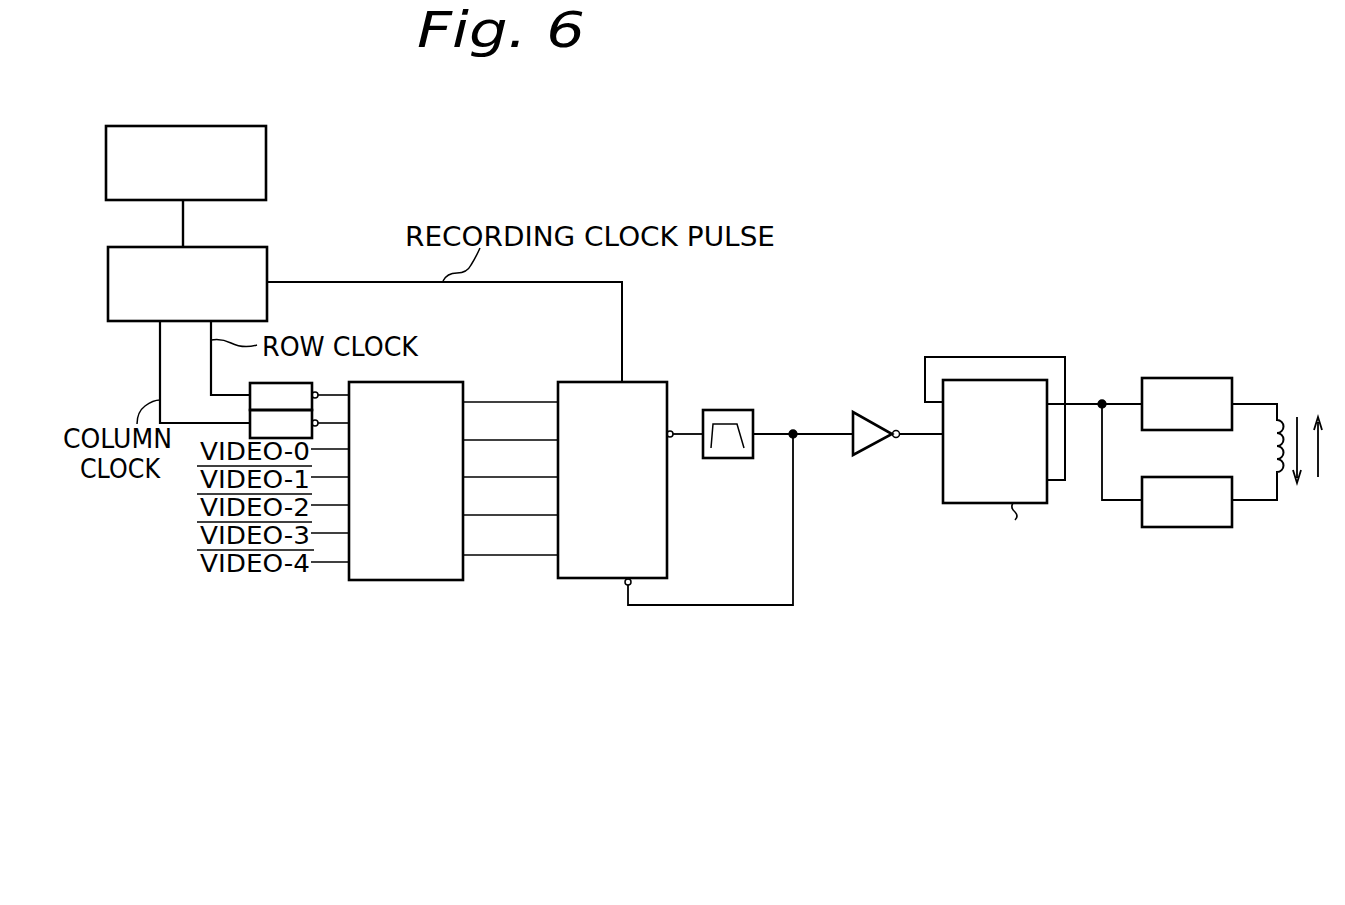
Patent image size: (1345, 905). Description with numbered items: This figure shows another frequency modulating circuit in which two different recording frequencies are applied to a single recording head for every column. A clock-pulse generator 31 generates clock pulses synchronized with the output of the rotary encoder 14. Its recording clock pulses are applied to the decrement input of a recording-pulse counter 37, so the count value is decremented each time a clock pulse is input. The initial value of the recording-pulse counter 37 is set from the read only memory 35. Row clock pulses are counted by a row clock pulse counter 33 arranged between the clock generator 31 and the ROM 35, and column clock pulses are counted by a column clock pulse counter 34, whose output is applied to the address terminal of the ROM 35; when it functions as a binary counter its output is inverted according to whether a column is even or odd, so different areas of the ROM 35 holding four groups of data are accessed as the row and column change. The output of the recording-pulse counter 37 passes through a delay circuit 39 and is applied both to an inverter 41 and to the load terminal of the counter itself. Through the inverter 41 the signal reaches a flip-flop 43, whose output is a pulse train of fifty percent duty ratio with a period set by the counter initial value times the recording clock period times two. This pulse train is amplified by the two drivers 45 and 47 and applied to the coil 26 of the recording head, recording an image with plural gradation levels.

The rotary encoder 14 is at (267, 148).
The clock-pulse generator 31 is at (263, 247).
The row clock pulse counter 33 is at (250, 383).
The column clock pulse counter 34 is at (250, 417).
The read only memory (ROM) 35 is at (425, 580).
The recording-pulse counter 37 is at (573, 578).
The delay circuit 39 is at (741, 410).
The inverter 41 is at (872, 412).
The flip-flop 43 is at (943, 478).
The driver 45 is at (1197, 378).
The driver 47 is at (1205, 527).
The coil 26 is at (1277, 404).